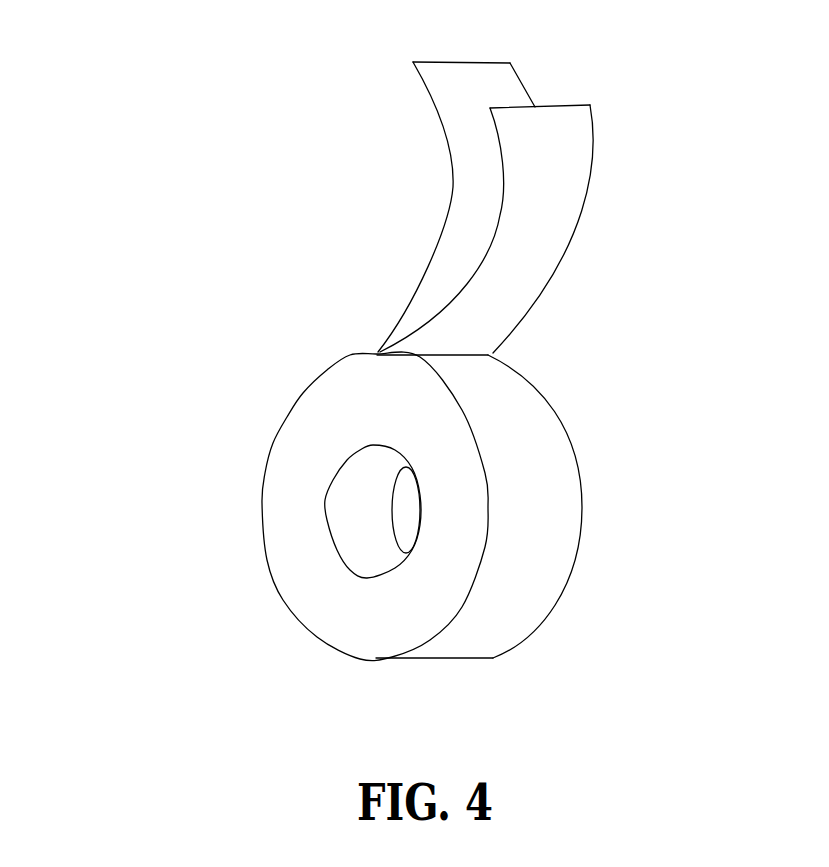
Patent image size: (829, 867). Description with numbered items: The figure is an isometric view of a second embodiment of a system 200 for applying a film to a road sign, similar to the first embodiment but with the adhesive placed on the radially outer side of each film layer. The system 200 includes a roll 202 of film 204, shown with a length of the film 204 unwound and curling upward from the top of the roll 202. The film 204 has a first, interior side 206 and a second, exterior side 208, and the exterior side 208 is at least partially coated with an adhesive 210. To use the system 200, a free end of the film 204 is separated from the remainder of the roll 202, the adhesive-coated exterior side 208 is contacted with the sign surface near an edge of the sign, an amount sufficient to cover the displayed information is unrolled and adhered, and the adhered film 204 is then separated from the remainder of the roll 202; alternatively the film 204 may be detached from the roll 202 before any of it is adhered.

The system 200 is at (118, 160).
The roll 202 is at (293, 593).
The film 204 is at (590, 130).
The interior side 206 is at (570, 227).
The exterior side 208 is at (567, 97).
The adhesive 210 is at (510, 63).